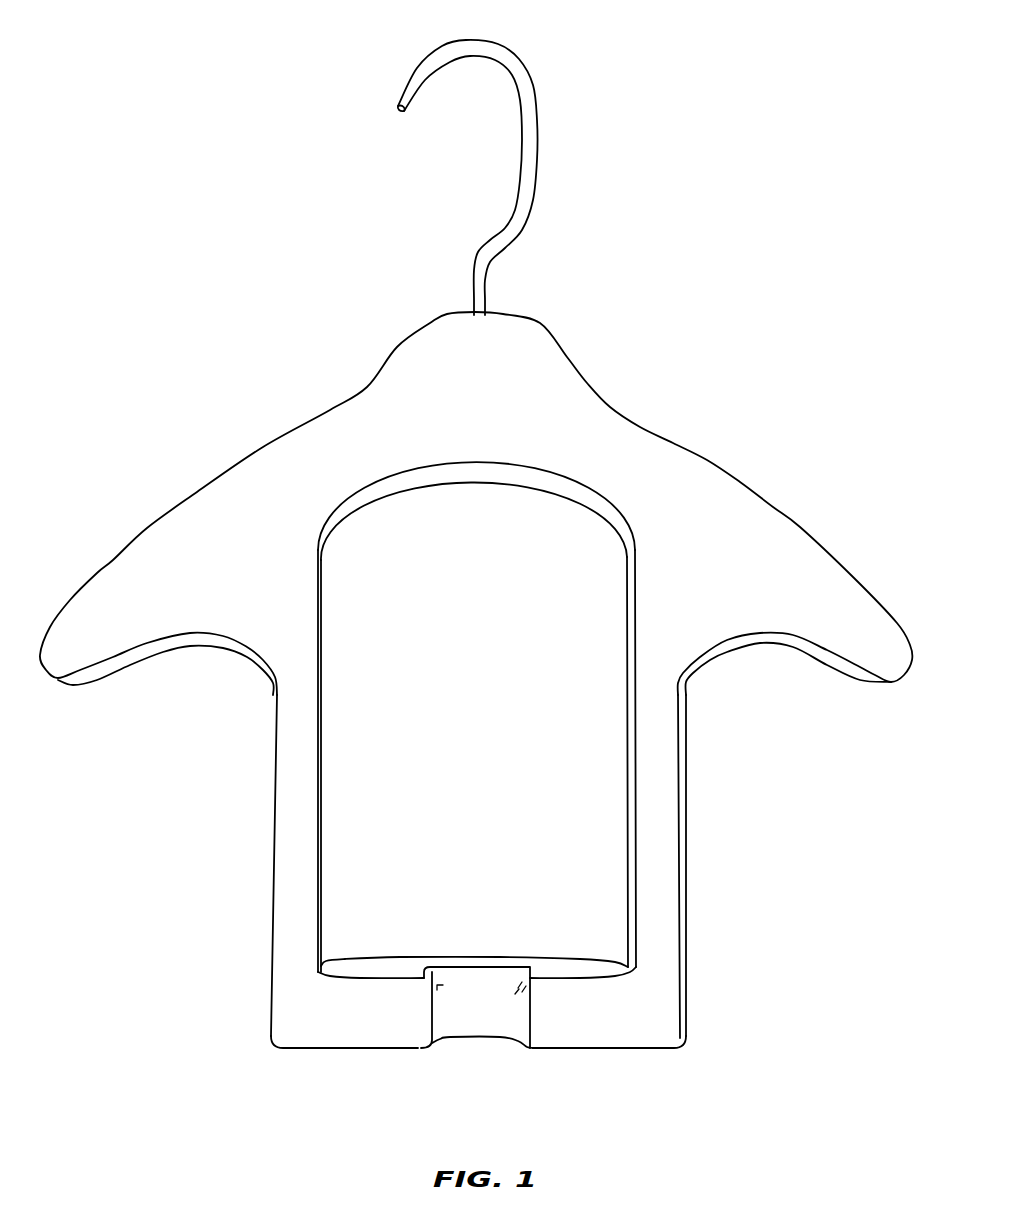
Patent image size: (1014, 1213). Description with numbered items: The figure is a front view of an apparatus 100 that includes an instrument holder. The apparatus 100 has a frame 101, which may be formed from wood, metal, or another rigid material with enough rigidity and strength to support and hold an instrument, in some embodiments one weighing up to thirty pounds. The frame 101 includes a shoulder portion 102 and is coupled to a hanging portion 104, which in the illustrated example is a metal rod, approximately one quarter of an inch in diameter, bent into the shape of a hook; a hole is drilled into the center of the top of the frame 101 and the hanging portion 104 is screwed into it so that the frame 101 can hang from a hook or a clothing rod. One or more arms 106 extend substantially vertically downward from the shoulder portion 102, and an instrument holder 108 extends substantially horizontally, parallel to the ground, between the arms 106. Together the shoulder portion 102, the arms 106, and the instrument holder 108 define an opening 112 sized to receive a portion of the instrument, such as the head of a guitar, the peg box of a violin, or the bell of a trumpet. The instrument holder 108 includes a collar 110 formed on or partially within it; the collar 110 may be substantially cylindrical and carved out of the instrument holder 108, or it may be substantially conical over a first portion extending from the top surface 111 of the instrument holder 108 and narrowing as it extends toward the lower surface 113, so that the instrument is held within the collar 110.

The apparatus 100 is at (139, 73).
The frame 101 is at (425, 416).
The shoulder portion 102 is at (147, 527).
The hanging portion 104 is at (481, 247).
The arms 106 is at (275, 793).
The instrument holder 108 is at (318, 1030).
The collar 110 is at (477, 1022).
The top surface 111 is at (532, 963).
The opening 112 is at (388, 727).
The lower surface 113 is at (553, 1048).